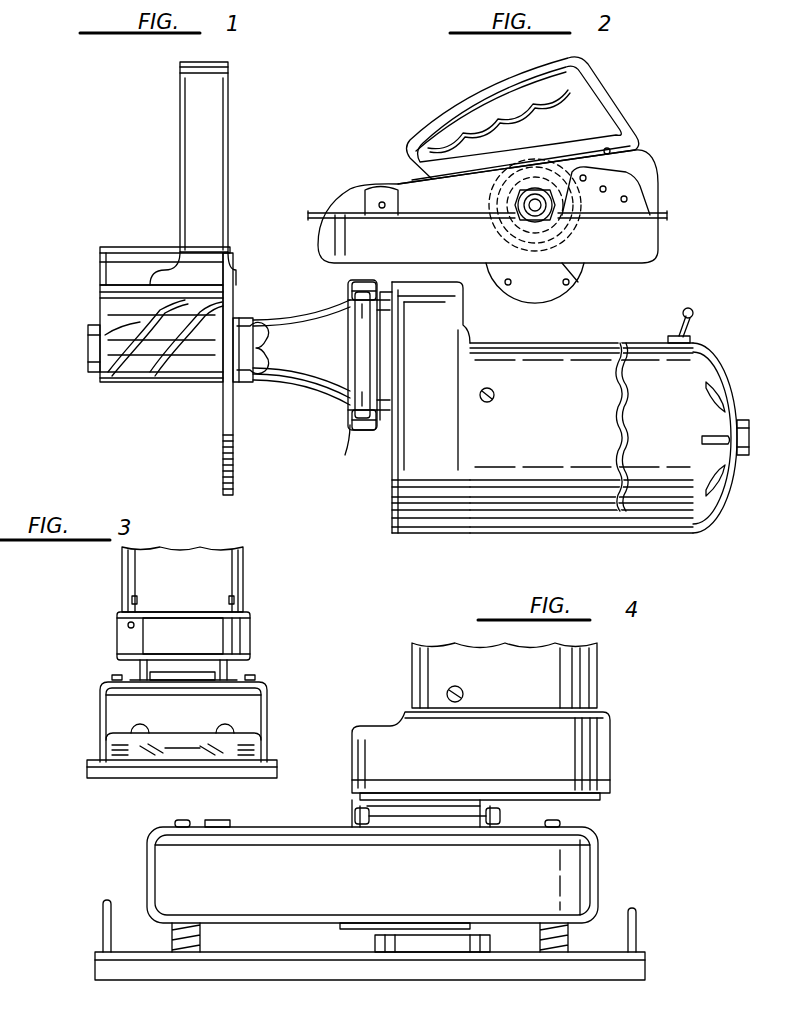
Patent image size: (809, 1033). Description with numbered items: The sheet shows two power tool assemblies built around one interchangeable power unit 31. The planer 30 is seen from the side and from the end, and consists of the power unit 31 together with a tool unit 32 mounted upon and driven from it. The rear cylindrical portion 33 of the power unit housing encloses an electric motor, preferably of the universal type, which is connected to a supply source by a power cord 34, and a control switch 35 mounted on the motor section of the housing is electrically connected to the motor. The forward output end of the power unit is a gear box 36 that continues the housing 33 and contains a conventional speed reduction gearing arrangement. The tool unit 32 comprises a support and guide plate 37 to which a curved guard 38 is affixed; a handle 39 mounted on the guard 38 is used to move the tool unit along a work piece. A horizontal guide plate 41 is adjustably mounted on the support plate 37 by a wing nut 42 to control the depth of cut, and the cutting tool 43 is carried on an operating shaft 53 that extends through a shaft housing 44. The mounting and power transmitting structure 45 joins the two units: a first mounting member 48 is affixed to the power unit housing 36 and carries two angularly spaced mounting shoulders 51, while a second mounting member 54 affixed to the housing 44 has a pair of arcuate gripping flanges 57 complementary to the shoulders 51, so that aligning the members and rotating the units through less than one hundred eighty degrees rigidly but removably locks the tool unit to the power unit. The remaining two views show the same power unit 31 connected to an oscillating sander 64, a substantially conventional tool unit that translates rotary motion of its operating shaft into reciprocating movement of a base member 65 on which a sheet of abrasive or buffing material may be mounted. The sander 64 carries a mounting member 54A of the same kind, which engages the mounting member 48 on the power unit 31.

In FIG. 1, the planer 30 is at (398, 320).
In FIG. 2, the planer 30 is at (511, 196).
In FIG. 1, the power unit 31 is at (613, 429).
In FIG. 2, the power unit 31 is at (522, 292).
In FIG. 3, the power unit 31 is at (233, 582).
In FIG. 4, the power unit 31 is at (590, 682).
In FIG. 1, the tool unit 32 is at (152, 235).
In FIG. 1, the rear cylindrical portion 33 is at (598, 522).
In FIG. 1, the power cord 34 is at (741, 458).
In FIG. 1, the control switch 35 is at (695, 325).
In FIG. 1, the gear box 36 is at (438, 534).
In FIG. 2, the gear box 36 is at (580, 278).
In FIG. 3, the gear box 36 is at (240, 640).
In FIG. 4, the gear box 36 is at (590, 760).
In FIG. 1, the support and guide plate 37 is at (233, 430).
In FIG. 2, the support and guide plate 37 is at (645, 235).
In FIG. 1, the curved guard 38 is at (115, 253).
In FIG. 2, the curved guard 38 is at (540, 136).
In FIG. 1, the handle 39 is at (220, 110).
In FIG. 2, the handle 39 is at (523, 120).
In FIG. 1, the horizontal guide plate 41 is at (180, 378).
In FIG. 2, the horizontal guide plate 41 is at (665, 215).
In FIG. 1, the wing nut 42 is at (258, 330).
In FIG. 1, the cutting tool 43 is at (100, 328).
In FIG. 2, the cutting tool 43 is at (530, 216).
In FIG. 1, the shaft housing 44 is at (312, 380).
In FIG. 1, the mounting and power transmitting structure 45 is at (361, 367).
In FIG. 1, the first mounting member 48 is at (422, 430).
In FIG. 3, the first mounting member 48 is at (176, 672).
In FIG. 4, the first mounting member 48 is at (415, 822).
In FIG. 1, the mounting shoulders 51 is at (366, 306).
In FIG. 2, the operating shaft 53 is at (540, 212).
In FIG. 1, the second mounting member 54 is at (350, 432).
In FIG. 3, the mounting member 54A is at (228, 673).
In FIG. 4, the mounting member 54A is at (503, 822).
In FIG. 1, the arcuate gripping flanges 57 is at (368, 283).
In FIG. 3, the oscillating sander 64 is at (272, 692).
In FIG. 4, the oscillating sander 64 is at (605, 848).
In FIG. 3, the base member 65 is at (248, 778).
In FIG. 4, the base member 65 is at (602, 973).